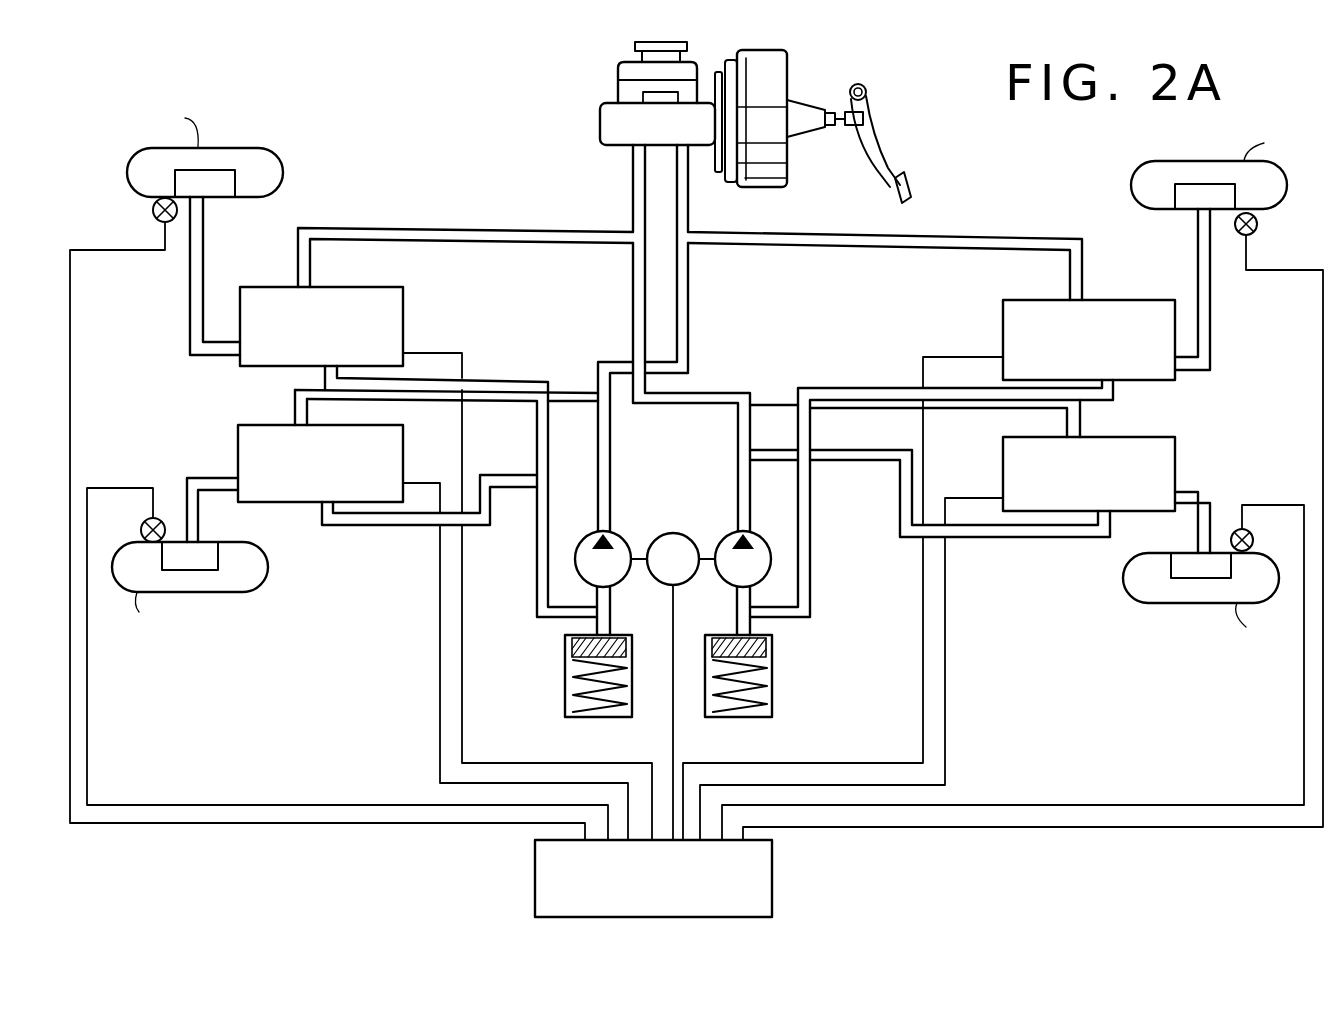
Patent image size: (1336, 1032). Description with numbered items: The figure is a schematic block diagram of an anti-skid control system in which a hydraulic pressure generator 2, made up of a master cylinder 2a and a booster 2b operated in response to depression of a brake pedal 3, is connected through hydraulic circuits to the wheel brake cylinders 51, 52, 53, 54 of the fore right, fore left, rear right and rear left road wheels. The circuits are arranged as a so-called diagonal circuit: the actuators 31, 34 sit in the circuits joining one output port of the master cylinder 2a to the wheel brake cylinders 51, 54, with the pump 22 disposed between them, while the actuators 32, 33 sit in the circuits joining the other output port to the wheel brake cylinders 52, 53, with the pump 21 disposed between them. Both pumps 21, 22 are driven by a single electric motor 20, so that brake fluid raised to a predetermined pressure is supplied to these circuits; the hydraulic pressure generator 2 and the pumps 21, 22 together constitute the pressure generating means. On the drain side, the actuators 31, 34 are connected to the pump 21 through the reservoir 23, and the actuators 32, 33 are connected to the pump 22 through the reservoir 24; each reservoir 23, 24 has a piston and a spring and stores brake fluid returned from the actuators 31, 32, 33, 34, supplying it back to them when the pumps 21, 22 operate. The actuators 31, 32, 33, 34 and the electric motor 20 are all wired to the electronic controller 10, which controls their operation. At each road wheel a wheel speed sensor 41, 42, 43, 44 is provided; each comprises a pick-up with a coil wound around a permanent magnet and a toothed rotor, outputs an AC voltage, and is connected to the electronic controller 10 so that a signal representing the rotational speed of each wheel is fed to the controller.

The hydraulic pressure generator 2 is at (598, 100).
The master cylinder 2a is at (600, 135).
The booster 2b is at (768, 187).
The brake pedal 3 is at (865, 150).
The electronic controller 10 is at (772, 867).
The electric motor 20 is at (664, 537).
The pump 21 is at (612, 535).
The pump 22 is at (751, 535).
The reservoir 23 is at (565, 684).
The reservoir 24 is at (772, 680).
The actuator 31 is at (375, 287).
The actuator 32 is at (238, 437).
The actuator 33 is at (1145, 300).
The actuator 34 is at (1178, 452).
The wheel speed sensor 41 is at (152, 214).
The wheel speed sensor 42 is at (142, 522).
The wheel speed sensor 43 is at (1258, 229).
The wheel speed sensor 44 is at (1253, 541).
The wheel brake cylinder 51 is at (215, 198).
The wheel brake cylinder 52 is at (202, 567).
The wheel brake cylinder 53 is at (1183, 211).
The wheel brake cylinder 54 is at (1183, 580).